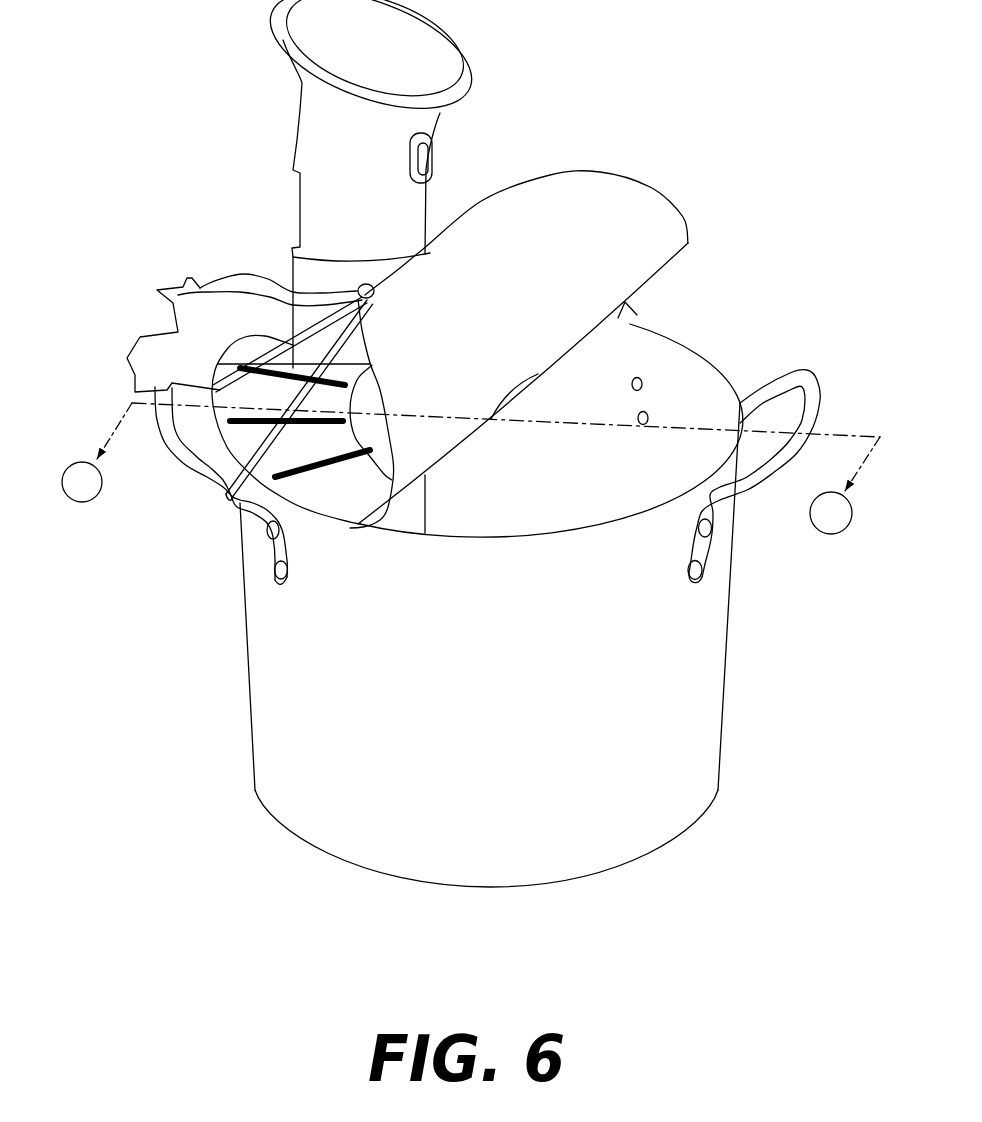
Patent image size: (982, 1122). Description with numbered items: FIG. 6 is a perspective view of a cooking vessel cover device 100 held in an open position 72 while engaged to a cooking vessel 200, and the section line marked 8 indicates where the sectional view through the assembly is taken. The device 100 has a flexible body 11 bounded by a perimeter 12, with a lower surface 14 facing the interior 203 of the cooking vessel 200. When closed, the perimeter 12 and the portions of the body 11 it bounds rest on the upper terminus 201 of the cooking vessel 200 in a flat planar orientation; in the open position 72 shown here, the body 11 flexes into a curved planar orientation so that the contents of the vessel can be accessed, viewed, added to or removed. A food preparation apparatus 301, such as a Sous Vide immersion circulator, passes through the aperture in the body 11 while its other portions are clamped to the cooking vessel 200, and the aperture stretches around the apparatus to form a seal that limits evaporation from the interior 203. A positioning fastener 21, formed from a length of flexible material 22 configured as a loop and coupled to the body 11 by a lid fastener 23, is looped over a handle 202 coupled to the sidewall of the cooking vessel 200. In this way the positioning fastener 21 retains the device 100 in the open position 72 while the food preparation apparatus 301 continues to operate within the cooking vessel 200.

The cooking vessel cover device 100 is at (455, 294).
The body 11 is at (553, 237).
The perimeter 12 is at (487, 227).
The lower surface 14 is at (620, 214).
The open position 72 is at (650, 157).
The food preparation apparatus 301 is at (267, 250).
The lid fastener 23 is at (383, 296).
The positioning fastener 21 is at (372, 317).
The length of flexible material 22 is at (223, 491).
The cooking vessel 200 is at (266, 835).
The upper terminus 201 is at (480, 542).
The handle 202 is at (175, 443).
The interior 203 is at (567, 493).
The section line 8- 8 is at (471, 468).